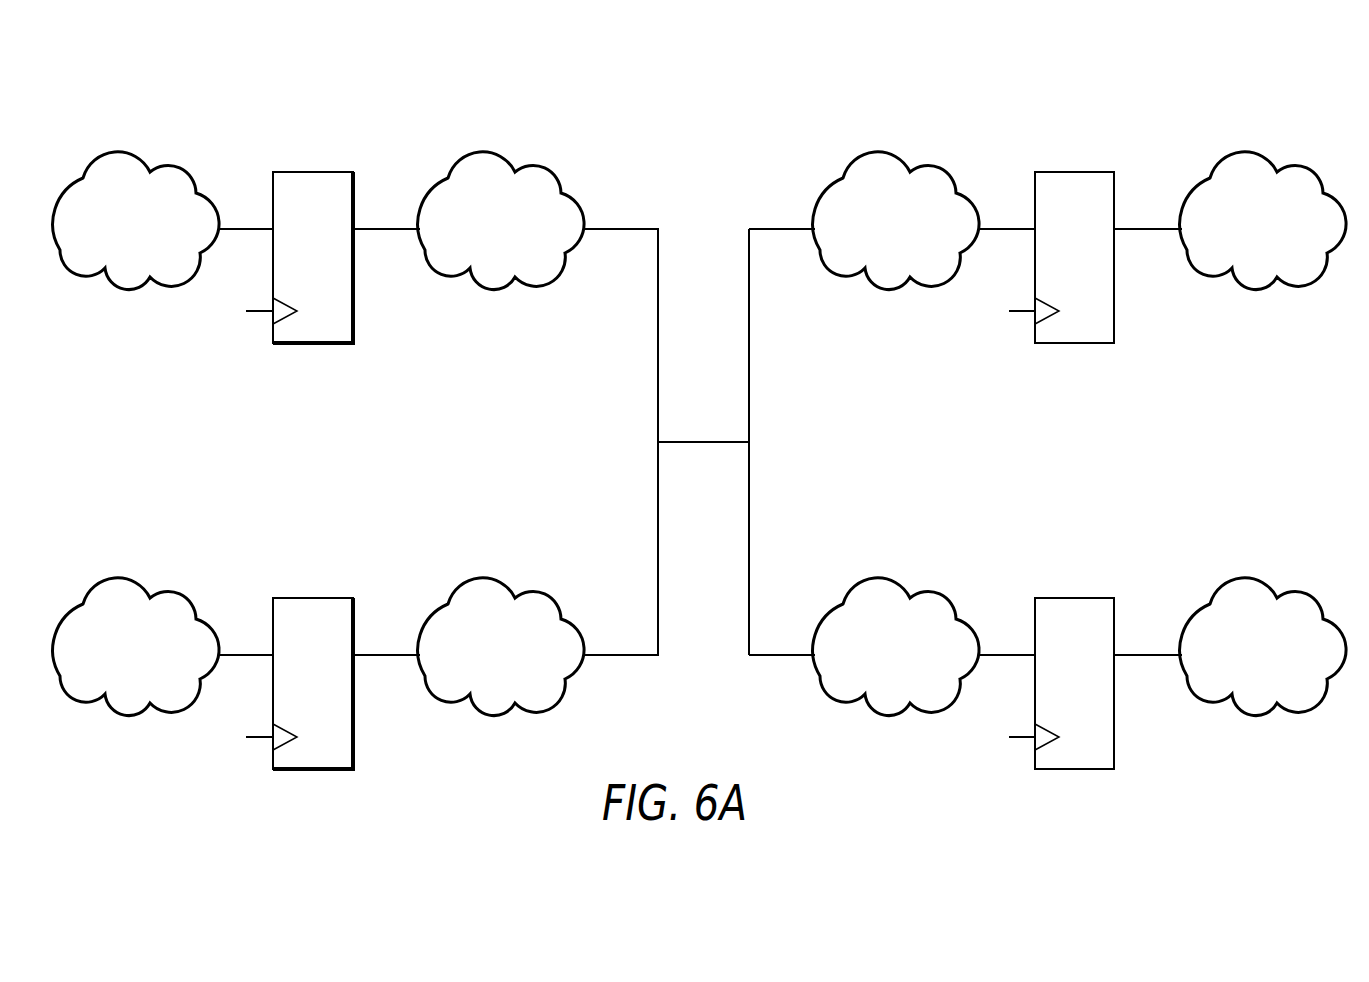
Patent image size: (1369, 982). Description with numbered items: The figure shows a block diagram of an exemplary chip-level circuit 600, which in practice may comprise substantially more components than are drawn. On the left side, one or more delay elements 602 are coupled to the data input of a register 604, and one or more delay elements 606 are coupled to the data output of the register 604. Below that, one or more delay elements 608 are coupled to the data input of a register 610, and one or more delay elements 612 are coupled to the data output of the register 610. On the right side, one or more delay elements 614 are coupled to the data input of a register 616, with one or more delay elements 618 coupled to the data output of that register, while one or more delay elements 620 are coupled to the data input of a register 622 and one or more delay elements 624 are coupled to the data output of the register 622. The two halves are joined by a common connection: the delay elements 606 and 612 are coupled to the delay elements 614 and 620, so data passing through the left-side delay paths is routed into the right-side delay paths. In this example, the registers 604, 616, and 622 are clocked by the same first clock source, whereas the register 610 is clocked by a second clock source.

The chip-level circuit 600 is at (1020, 80).
The delay elements 602 is at (125, 153).
The register 604 is at (293, 172).
The delay elements 606 is at (496, 153).
The delay elements 608 is at (125, 579).
The register 610 is at (293, 598).
The delay elements 612 is at (496, 579).
The delay elements 614 is at (892, 153).
The register 616 is at (1060, 172).
The delay elements 618 is at (1243, 153).
The delay elements 620 is at (892, 579).
The register 622 is at (1060, 598).
The delay elements 624 is at (1243, 579).